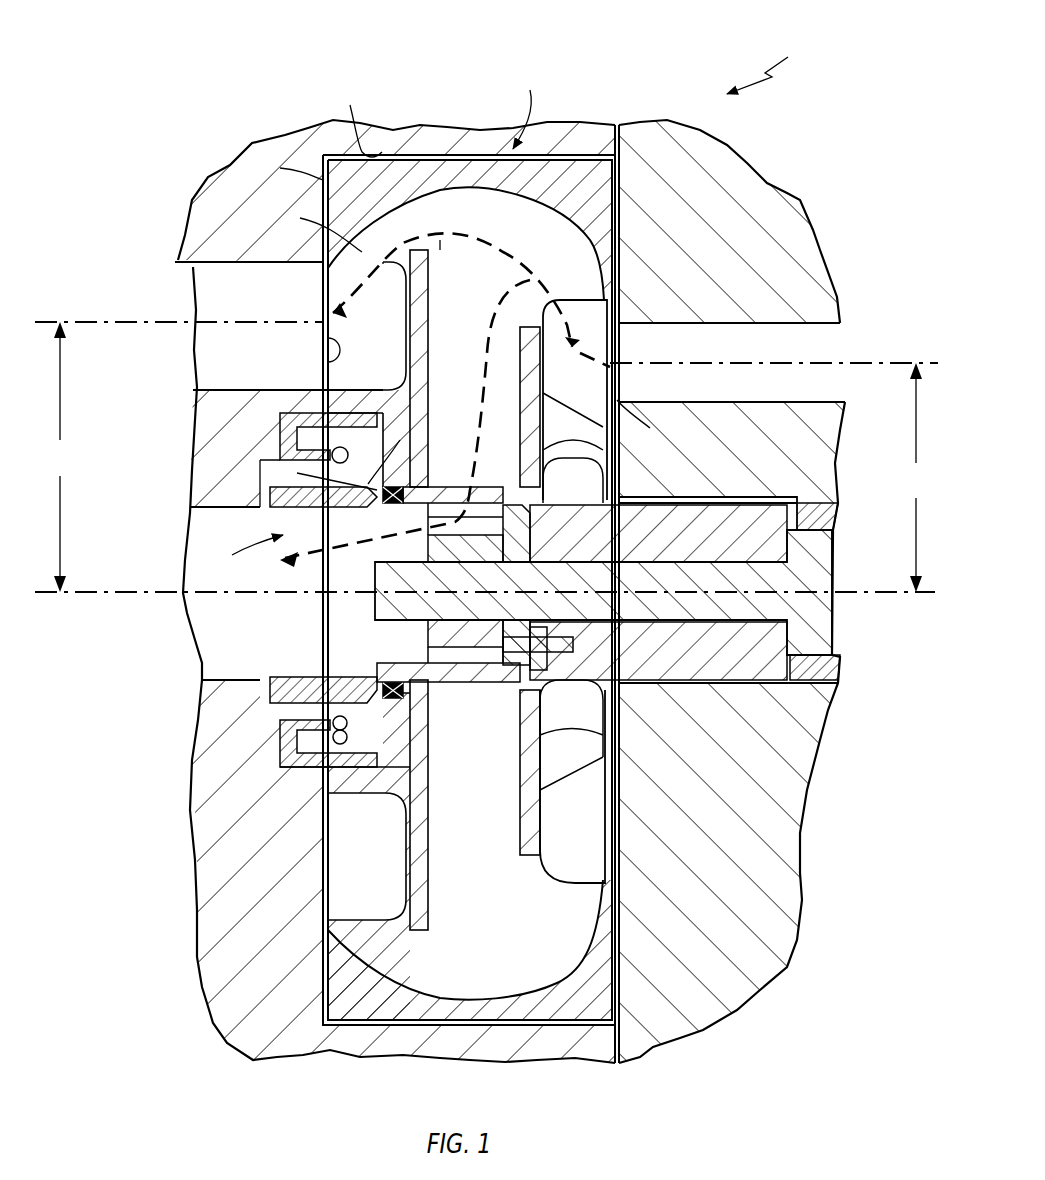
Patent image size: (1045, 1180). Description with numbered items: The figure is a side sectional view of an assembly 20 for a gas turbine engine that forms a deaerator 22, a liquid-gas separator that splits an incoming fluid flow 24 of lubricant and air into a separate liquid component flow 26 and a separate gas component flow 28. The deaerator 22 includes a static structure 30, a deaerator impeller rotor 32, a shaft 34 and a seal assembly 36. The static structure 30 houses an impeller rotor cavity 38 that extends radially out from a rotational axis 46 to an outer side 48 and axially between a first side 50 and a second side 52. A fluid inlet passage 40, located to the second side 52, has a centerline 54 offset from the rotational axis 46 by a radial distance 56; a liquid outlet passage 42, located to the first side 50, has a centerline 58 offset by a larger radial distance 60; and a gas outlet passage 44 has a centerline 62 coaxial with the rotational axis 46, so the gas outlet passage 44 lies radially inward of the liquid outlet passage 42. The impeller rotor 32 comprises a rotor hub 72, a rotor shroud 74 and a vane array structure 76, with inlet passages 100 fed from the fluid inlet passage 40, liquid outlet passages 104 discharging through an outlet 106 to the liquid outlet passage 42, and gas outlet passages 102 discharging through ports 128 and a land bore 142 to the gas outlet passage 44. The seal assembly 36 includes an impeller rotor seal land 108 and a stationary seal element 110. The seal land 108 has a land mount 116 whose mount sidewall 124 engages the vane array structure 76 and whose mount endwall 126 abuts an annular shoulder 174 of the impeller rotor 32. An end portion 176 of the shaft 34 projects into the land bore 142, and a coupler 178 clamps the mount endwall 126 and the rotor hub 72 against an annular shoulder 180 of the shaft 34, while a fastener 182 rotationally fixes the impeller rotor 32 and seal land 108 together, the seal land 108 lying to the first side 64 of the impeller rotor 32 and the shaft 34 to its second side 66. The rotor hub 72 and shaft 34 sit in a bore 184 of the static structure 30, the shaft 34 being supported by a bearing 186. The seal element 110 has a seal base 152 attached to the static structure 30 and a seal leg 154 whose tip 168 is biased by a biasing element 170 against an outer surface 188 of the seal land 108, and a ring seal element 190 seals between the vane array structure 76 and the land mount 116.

The assembly 20 is at (781, 62).
The deaerator 22 is at (727, 94).
The fluid flow 24 is at (585, 350).
The liquid component flow 26 is at (372, 288).
The gas component flow 28 is at (480, 410).
The static structure 30 is at (742, 163).
The deaerator impeller rotor 32 is at (446, 149).
The shaft 34 is at (832, 563).
The seal assembly 36 is at (260, 514).
The impeller rotor cavity 38 is at (626, 228).
The fluid inlet passage 40 is at (828, 333).
The liquid outlet passage 42 is at (213, 288).
The gas outlet passage 44 is at (220, 637).
The rotational axis 46 is at (50, 595).
The outer side 48 is at (357, 117).
The first side 50 is at (330, 350).
The second side 52 is at (645, 426).
The centerline 54 is at (938, 360).
The radial distance 56 is at (920, 477).
The centerline 58 is at (58, 320).
The radial distance 60 is at (65, 457).
The centerline 62 is at (50, 595).
The first side 64 is at (287, 167).
The second side 66 is at (813, 508).
The rotor hub 72 is at (703, 688).
The rotor shroud 74 is at (529, 104).
The vane array structure 76 is at (552, 827).
The inlet passages 100 is at (553, 287).
The gas outlet passages 102 is at (437, 377).
The liquid outlet passages 104 is at (312, 224).
The outlet 106 is at (343, 373).
The impeller rotor seal land 108 is at (298, 670).
The stationary seal element 110 is at (280, 746).
The land mount 116 is at (425, 690).
The mount sidewall 124 is at (425, 690).
The mount endwall 126 is at (523, 563).
The ports 128 is at (524, 487).
The land bore 142 is at (246, 552).
The seal base 152 is at (285, 445).
The seal leg 154 is at (330, 478).
The tip 168 is at (395, 448).
The biasing element 170 is at (333, 452).
The annular shoulder 174 is at (528, 530).
The end portion 176 is at (397, 603).
The coupler 178 is at (445, 672).
The annular shoulder 180 is at (782, 618).
The fastener 182 is at (549, 681).
The bore 184 is at (731, 495).
The bearing 186 is at (845, 671).
The outer surface 188 is at (316, 489).
The ring seal element 190 is at (397, 700).